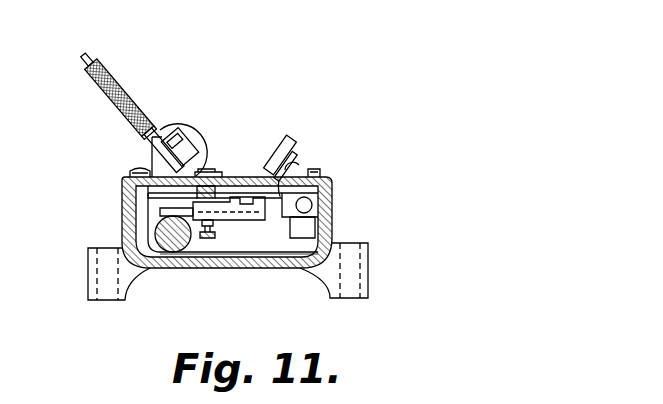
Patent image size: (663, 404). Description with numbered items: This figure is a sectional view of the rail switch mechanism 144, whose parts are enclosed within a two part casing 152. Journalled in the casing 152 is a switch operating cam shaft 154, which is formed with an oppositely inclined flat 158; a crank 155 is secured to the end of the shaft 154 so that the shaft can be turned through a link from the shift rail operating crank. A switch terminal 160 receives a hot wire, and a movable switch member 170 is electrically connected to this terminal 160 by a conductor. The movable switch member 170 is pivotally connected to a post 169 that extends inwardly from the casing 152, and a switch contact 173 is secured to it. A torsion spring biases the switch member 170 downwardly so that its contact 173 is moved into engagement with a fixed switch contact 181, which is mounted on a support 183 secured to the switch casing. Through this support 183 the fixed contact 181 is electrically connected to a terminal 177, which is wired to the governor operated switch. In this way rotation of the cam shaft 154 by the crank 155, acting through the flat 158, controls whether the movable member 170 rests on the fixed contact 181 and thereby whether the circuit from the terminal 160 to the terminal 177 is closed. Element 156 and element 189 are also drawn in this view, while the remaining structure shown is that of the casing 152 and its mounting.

The rail switch mechanism 144 is at (343, 193).
The two part casing 152 is at (207, 240).
The switch operating cam shaft 154 is at (186, 253).
The crank 155 is at (155, 155).
The liner 156 is at (148, 203).
The oppositely inclined flat 158 is at (160, 213).
The switch terminal 160 is at (302, 143).
The post 169 is at (308, 226).
The movable switch member 170 is at (253, 200).
The switch contact 173 is at (213, 222).
The terminal 177 is at (207, 140).
The fixed switch contact 181 is at (215, 232).
The support 183 is at (213, 257).
The probe 189 is at (127, 77).